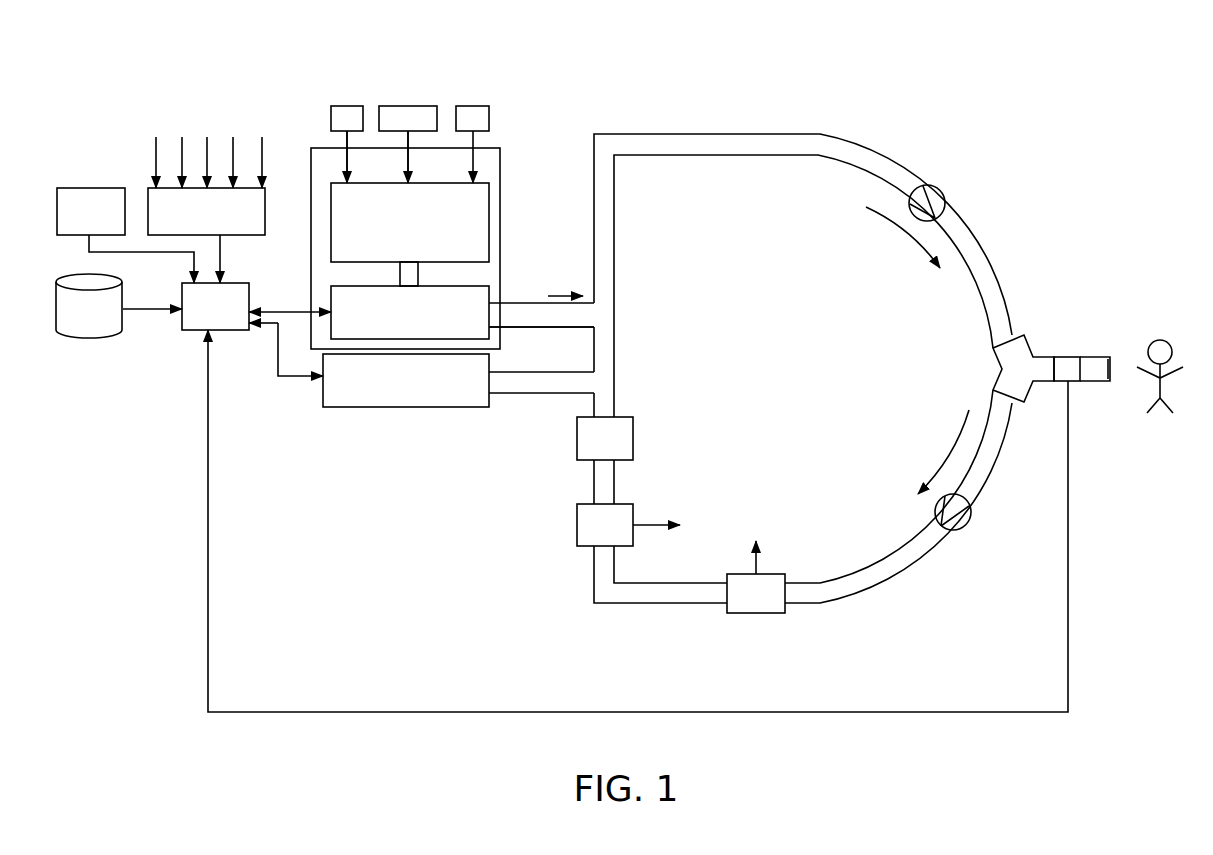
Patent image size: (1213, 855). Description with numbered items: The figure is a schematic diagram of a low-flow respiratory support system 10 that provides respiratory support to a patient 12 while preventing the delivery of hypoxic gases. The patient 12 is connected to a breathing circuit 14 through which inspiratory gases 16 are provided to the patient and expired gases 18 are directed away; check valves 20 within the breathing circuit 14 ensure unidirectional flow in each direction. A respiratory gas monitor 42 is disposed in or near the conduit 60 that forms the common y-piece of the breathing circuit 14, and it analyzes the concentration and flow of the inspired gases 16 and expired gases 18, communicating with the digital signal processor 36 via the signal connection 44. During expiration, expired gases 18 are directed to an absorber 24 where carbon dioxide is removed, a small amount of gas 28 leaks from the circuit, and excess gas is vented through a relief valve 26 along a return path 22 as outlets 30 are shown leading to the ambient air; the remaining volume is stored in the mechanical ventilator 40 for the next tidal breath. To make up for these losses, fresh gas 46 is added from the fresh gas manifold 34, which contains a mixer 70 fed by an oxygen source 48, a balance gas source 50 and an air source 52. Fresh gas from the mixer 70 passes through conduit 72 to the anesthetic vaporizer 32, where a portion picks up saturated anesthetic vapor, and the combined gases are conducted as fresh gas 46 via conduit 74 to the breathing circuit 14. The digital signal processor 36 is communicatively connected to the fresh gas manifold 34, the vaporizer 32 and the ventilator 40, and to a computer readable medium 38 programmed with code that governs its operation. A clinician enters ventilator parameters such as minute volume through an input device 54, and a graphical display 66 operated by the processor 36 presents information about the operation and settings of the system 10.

The respiratory support system 10 is at (1027, 117).
The patient 12 is at (1160, 340).
The breathing circuit 14 is at (735, 134).
The inspiratory gases 16 is at (908, 241).
The expired gases 18 is at (947, 457).
The check valves 20 is at (938, 186).
The gas return path 22 is at (679, 466).
The absorber 24 is at (592, 450).
The relief valve 26 is at (592, 537).
The leaked gas 28 is at (743, 605).
The scavenged gas outlet 30 is at (701, 543).
The anesthetic vaporizer 32 is at (477, 284).
The fresh gas manifold 34 is at (494, 148).
The digital signal processor 36 is at (193, 330).
The computer readable medium 38 is at (76, 321).
The mechanical ventilator 40 is at (440, 408).
The respiratory gas monitor 42 is at (1073, 383).
The signal 44 is at (311, 710).
The fresh gas 46 is at (557, 293).
The oxygen source 48 is at (347, 106).
The balance gas source 50 is at (473, 106).
The air source 52 is at (408, 106).
The input device 54 is at (193, 223).
The conduit 60 is at (1098, 357).
The graphical display 66 is at (78, 223).
The mixer 70 is at (331, 218).
The conduit 72 is at (400, 275).
The conduit 74 is at (563, 330).